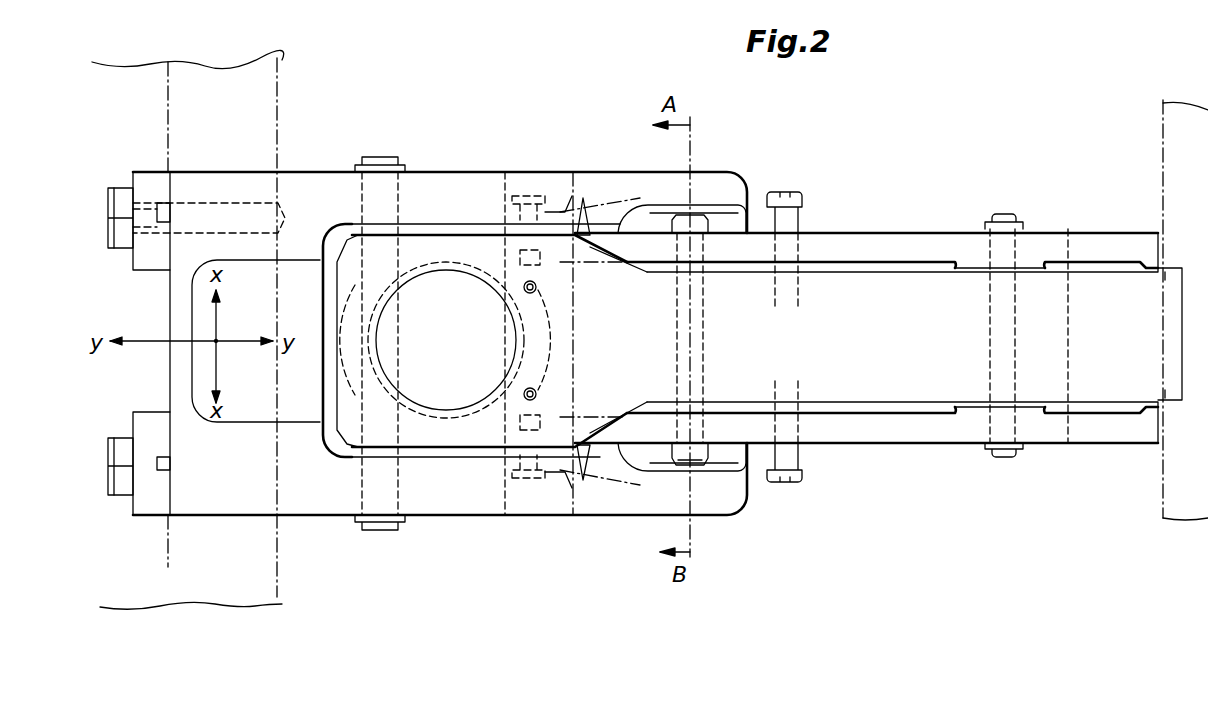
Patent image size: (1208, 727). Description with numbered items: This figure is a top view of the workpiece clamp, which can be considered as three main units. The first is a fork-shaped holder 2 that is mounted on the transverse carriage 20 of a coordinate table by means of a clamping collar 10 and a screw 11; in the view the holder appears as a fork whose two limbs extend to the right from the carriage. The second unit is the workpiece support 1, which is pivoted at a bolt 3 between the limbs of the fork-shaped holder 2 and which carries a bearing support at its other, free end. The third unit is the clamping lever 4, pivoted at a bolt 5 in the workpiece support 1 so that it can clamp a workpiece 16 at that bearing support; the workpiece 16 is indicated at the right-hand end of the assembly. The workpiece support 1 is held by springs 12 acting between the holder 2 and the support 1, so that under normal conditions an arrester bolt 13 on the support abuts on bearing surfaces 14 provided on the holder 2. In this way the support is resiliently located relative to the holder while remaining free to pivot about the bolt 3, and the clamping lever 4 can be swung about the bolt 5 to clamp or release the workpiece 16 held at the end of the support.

The workpiece support 1 is at (1072, 240).
The fork-shaped holder 2 is at (437, 183).
The bolt 3 is at (375, 158).
The clamping lever 4 is at (875, 283).
The bolt 5 is at (1013, 243).
The clamping collar 10 is at (152, 423).
The screw 11 is at (131, 190).
The springs 12 is at (596, 487).
The arrester bolt 13 is at (680, 215).
The bearing surfaces 14 is at (720, 465).
The workpiece 16 is at (1180, 482).
The transverse carriage 20 is at (250, 598).